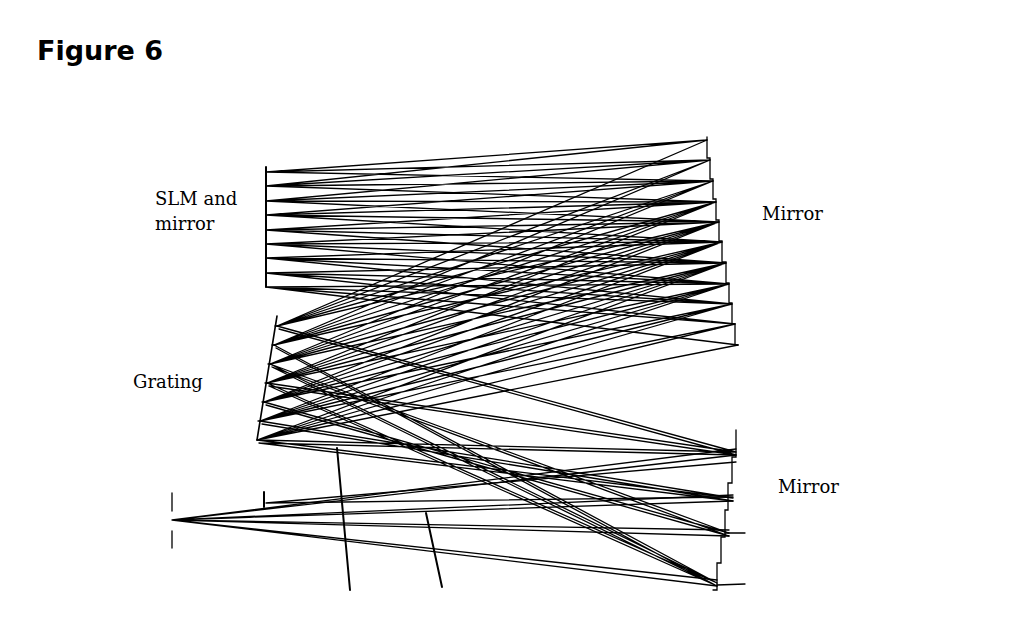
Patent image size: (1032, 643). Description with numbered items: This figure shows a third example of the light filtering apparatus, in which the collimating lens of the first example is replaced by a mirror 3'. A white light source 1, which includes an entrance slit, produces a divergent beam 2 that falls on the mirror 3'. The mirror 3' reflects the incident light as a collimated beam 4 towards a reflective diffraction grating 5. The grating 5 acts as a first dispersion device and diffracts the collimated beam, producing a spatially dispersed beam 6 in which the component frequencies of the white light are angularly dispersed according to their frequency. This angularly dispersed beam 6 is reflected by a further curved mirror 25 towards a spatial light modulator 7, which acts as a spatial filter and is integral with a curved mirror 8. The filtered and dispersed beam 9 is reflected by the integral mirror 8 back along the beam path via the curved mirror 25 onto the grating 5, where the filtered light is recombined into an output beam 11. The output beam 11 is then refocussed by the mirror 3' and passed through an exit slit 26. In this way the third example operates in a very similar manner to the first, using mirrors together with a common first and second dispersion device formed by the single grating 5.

The spatial light modulator 7 is at (220, 195).
The curved mirror 8 is at (266, 180).
The filtered light beam 9 is at (400, 182).
The curved mirror 25 is at (730, 251).
The spatially dispersed beam 6 is at (648, 341).
The reflective diffraction grating 5 is at (270, 355).
The collimated beam 4 is at (575, 417).
The mirror 3' is at (758, 510).
The exit slit 26 is at (172, 545).
The white light source 1 is at (260, 503).
The output beam 11 is at (354, 535).
The divergent beam 2 is at (439, 568).